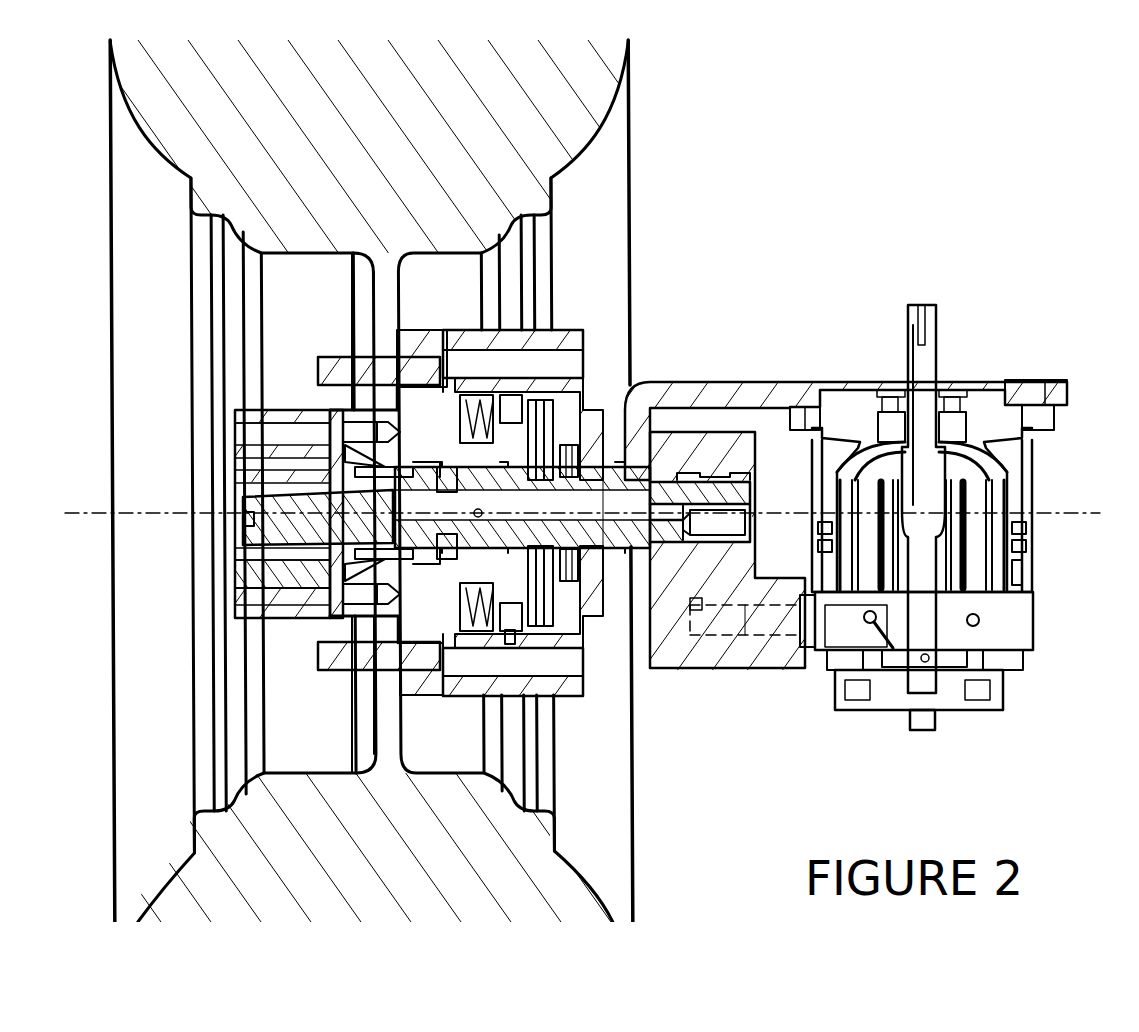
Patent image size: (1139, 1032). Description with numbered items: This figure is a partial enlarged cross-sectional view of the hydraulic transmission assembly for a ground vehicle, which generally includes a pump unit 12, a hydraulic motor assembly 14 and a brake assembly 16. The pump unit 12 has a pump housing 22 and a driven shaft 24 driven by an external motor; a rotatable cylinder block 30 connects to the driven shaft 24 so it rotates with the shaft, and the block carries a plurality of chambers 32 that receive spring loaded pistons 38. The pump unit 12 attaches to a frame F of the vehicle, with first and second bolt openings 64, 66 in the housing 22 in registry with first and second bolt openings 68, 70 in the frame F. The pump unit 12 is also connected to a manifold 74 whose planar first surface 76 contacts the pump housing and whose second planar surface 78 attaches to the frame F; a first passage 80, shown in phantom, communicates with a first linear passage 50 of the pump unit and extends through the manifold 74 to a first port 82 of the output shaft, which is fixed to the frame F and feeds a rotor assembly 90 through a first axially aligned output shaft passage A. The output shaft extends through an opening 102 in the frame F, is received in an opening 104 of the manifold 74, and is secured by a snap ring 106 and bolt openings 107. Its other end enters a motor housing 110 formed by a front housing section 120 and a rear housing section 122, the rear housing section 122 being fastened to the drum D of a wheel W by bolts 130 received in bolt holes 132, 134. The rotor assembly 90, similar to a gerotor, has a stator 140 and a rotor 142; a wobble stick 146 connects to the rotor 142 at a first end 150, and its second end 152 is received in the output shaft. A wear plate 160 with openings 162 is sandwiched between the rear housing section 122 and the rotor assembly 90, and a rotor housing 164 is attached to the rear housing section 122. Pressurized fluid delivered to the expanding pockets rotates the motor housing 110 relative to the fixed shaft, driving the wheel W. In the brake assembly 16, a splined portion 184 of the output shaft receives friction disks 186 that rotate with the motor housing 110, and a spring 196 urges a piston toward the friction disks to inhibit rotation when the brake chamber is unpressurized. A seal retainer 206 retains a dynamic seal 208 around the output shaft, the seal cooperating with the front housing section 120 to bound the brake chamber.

The hydraulic motor assembly 14 is at (590, 308).
The wheel W is at (590, 97).
The drum D is at (645, 194).
The pump unit 12 is at (1043, 323).
The brake assembly 16 is at (470, 682).
The pump housing 22 is at (1047, 539).
The driven shaft 24 is at (932, 320).
The rotatable cylinder block 30 is at (990, 472).
The chambers 32 is at (1008, 580).
The spring loaded pistons 38 is at (1000, 493).
The first linear passage 50 is at (820, 652).
The first bolt opening 64 is at (1057, 415).
The second bolt opening 66 is at (805, 430).
The first bolt opening 68 is at (1035, 385).
The second bolt opening 70 is at (812, 390).
The manifold 74 is at (715, 700).
The planar first surface 76 is at (790, 670).
The second planar surface 78 is at (665, 652).
The first passage 80 is at (744, 672).
The first port 82 is at (690, 645).
The rotor assembly 90 is at (285, 642).
The opening 102 is at (620, 596).
The opening 104 is at (690, 485).
The snap ring 106 is at (618, 465).
The bolt openings 107 is at (748, 497).
The motor housing 110 is at (574, 322).
The front housing section 120 is at (560, 698).
The rear housing section 122 is at (430, 328).
The bolts 130 is at (333, 356).
The bolt hole 132 is at (450, 662).
The bolt hole 134 is at (400, 700).
The stator 140 is at (250, 606).
The rotor 142 is at (238, 494).
The wobble stick 146 is at (243, 530).
The first end 150 is at (243, 522).
The second end 152 is at (343, 560).
The wear plate 160 is at (340, 592).
The openings 162 is at (345, 428).
The rotor housing 164 is at (242, 612).
The splined portion 184 is at (548, 590).
The friction disks 186 is at (530, 622).
The spring 196 is at (482, 630).
The seal retainer 206 is at (572, 470).
The dynamic seal 208 is at (570, 568).
The frame F is at (697, 364).
The first axially aligned output shaft passage A is at (718, 382).